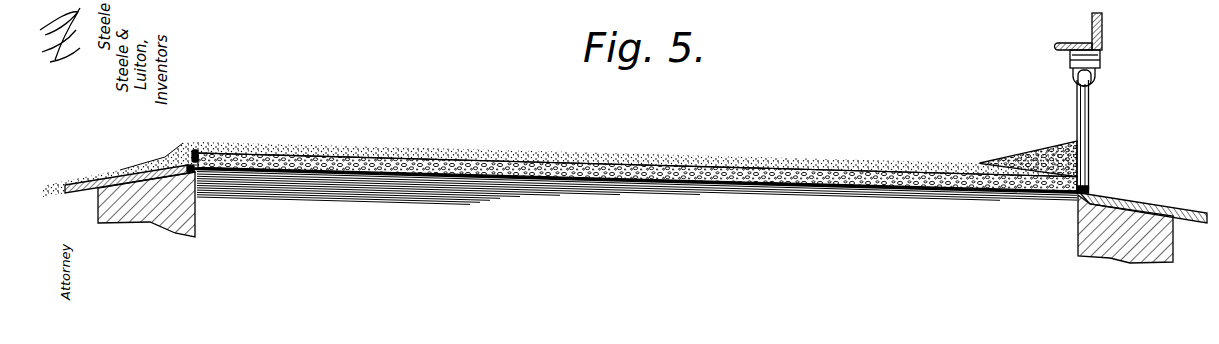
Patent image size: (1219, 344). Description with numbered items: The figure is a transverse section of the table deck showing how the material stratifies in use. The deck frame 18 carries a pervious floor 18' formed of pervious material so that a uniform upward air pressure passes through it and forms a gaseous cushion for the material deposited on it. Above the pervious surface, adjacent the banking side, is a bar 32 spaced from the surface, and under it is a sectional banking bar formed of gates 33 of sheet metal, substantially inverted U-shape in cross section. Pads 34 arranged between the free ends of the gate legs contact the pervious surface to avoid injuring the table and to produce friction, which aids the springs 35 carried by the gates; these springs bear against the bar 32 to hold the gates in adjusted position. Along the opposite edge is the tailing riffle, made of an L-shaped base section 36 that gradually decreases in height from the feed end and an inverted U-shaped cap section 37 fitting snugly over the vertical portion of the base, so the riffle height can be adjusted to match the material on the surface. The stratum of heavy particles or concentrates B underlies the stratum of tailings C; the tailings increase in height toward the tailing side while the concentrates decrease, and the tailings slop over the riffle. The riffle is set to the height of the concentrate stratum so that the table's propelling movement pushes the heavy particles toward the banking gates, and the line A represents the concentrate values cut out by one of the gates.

The deck frame 18 is at (635, 230).
The pervious floor 18' is at (637, 199).
The bar 32 is at (1100, 14).
The gates 33 is at (1090, 110).
The pads 34 is at (1089, 191).
The springs 35 is at (1100, 55).
The L-shaped base section 36 is at (187, 157).
The cap section 37 is at (197, 150).
The line of concentrate values A is at (980, 160).
The stratum of values or heavy particles B is at (824, 160).
The stratum of tailings C is at (510, 152).